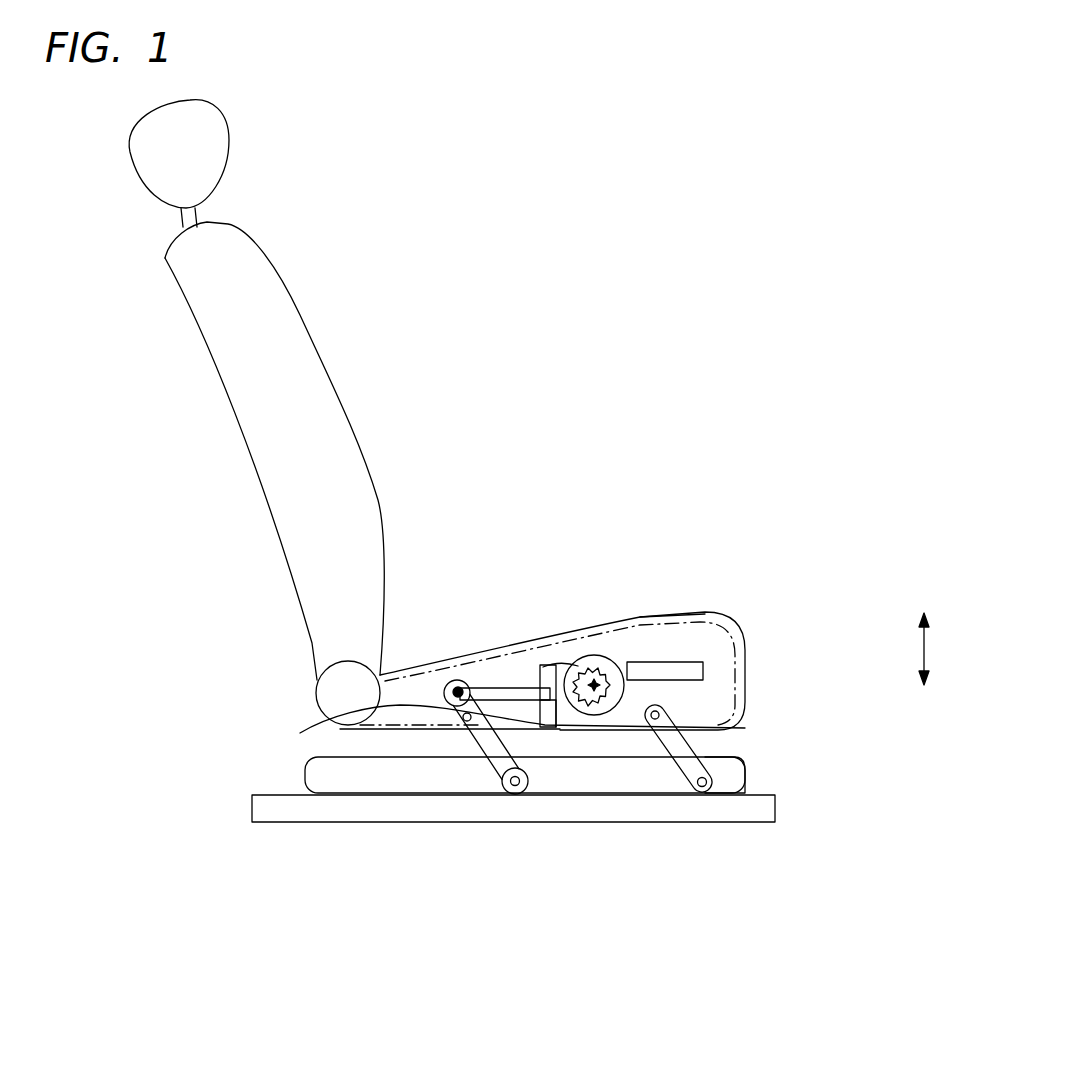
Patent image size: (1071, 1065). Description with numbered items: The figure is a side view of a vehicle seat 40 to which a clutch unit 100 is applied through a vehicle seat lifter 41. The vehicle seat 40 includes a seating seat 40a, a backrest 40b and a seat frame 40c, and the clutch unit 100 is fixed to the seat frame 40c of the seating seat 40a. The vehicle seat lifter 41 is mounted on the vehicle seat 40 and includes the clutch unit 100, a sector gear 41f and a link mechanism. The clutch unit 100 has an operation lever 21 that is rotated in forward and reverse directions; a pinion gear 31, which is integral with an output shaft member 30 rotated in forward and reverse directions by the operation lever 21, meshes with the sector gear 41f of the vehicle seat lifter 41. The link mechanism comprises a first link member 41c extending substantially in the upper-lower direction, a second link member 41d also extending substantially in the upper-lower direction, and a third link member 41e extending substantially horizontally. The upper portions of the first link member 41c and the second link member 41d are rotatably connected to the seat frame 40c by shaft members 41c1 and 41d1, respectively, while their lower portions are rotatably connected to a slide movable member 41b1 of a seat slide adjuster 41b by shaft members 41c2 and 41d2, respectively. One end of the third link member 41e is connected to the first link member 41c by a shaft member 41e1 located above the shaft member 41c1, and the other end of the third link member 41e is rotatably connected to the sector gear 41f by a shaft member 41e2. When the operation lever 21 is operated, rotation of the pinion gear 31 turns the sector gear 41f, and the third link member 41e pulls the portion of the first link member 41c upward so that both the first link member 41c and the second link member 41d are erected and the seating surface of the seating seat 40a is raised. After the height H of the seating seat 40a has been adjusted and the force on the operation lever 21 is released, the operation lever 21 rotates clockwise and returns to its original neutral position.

The vehicle seat 40 is at (262, 594).
The seating seat 40a is at (715, 612).
The backrest 40b is at (293, 356).
The seat frame 40c is at (748, 692).
The vehicle seat lifter 41 is at (730, 502).
The seat slide adjuster 41b is at (318, 838).
The slide movable member 41b1 is at (412, 778).
The first link member 41c is at (489, 750).
The shaft member 41c1 is at (342, 708).
The shaft member 41c2 is at (524, 784).
The second link member 41d is at (663, 747).
The shaft member 41d1 is at (733, 727).
The shaft member 41d2 is at (708, 782).
The third link member 41e is at (507, 688).
The shaft member 41e1 is at (458, 688).
The shaft member 41e2 is at (540, 727).
The sector gear 41f is at (547, 720).
The output shaft member 30 is at (605, 715).
The pinion gear 31 is at (600, 680).
The clutch unit 100 is at (631, 647).
The operation lever 21 is at (722, 690).
The height H is at (939, 649).